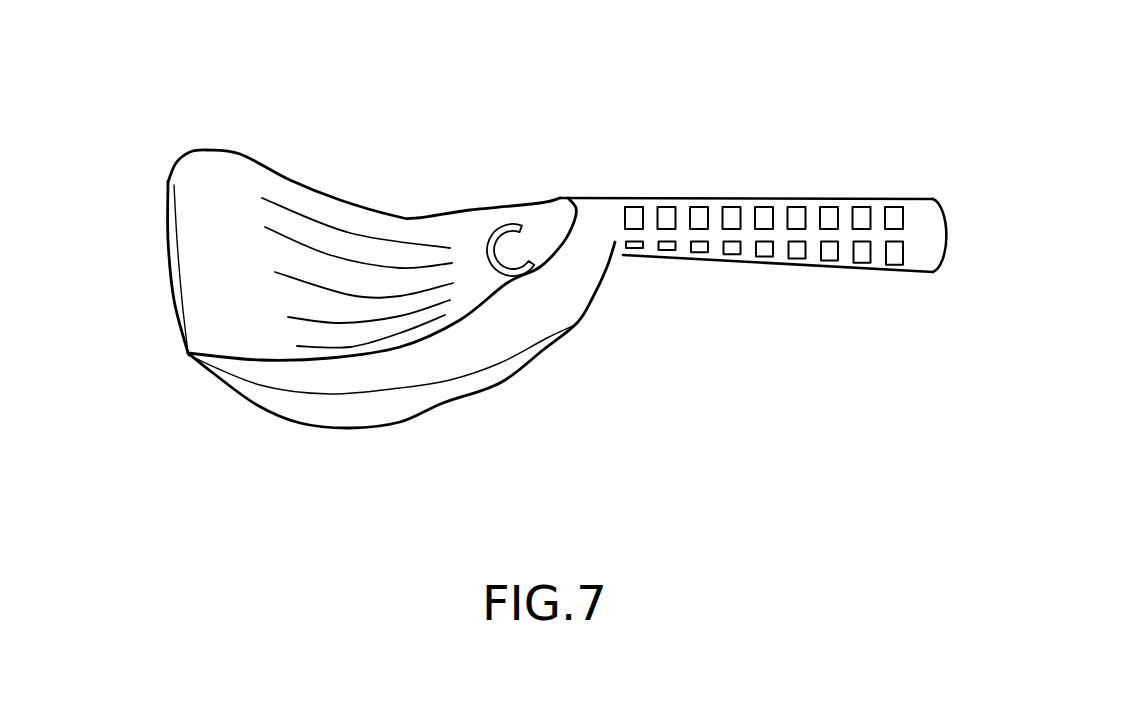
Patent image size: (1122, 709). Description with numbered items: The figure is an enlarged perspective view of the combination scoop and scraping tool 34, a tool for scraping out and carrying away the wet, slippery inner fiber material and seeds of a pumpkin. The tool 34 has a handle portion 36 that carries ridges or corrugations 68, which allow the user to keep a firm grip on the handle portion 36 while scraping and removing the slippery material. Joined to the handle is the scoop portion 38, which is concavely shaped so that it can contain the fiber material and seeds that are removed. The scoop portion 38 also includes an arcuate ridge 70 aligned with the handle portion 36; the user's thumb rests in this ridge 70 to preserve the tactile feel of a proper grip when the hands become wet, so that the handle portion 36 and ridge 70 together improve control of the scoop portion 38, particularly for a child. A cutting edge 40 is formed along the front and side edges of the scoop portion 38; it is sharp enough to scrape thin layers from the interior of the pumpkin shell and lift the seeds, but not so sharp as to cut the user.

The combination scoop and scraping tool 34 is at (762, 305).
The handle portion 36 is at (928, 218).
The scoop portion 38 is at (222, 168).
The cutting edge 40 is at (167, 223).
The ridges or corrugations 68 is at (662, 210).
The arcuate ridge 70 is at (500, 229).